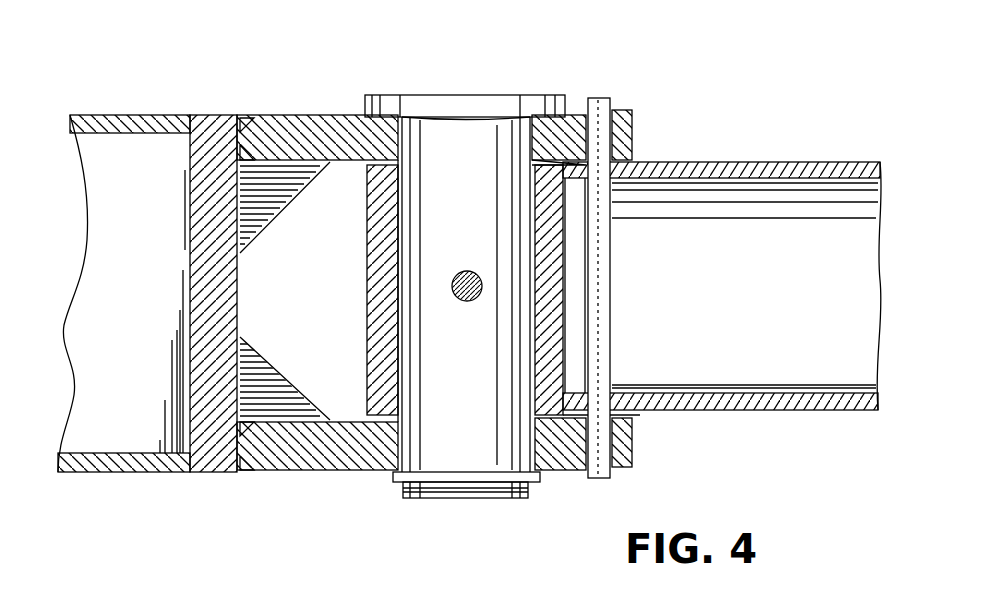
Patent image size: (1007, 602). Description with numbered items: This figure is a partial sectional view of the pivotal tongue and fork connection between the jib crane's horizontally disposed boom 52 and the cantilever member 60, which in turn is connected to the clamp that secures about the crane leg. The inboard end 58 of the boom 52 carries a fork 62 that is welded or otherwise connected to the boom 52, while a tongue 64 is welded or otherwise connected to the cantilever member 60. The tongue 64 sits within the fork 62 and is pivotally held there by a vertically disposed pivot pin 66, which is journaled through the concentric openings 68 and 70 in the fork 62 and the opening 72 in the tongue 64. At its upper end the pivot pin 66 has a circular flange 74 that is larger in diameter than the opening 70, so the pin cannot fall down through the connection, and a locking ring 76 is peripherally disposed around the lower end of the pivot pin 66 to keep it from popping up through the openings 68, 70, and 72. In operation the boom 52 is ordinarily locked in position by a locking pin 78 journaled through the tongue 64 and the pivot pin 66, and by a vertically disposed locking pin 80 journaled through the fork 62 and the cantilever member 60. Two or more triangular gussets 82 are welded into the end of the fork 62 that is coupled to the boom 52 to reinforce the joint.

The boom 52 is at (92, 370).
The inboard end 58 is at (123, 115).
The cantilever member 60 is at (832, 212).
The fork 62 is at (297, 117).
The tongue 64 is at (378, 225).
The pivot pin 66 is at (397, 475).
The opening 68 is at (545, 468).
The opening 70 is at (535, 107).
The opening 72 is at (363, 295).
The circular flange 74 is at (408, 100).
The locking ring 76 is at (537, 476).
The locking pin 78 is at (457, 297).
The locking pin 80 is at (598, 98).
The triangular gussets 82 is at (237, 200).